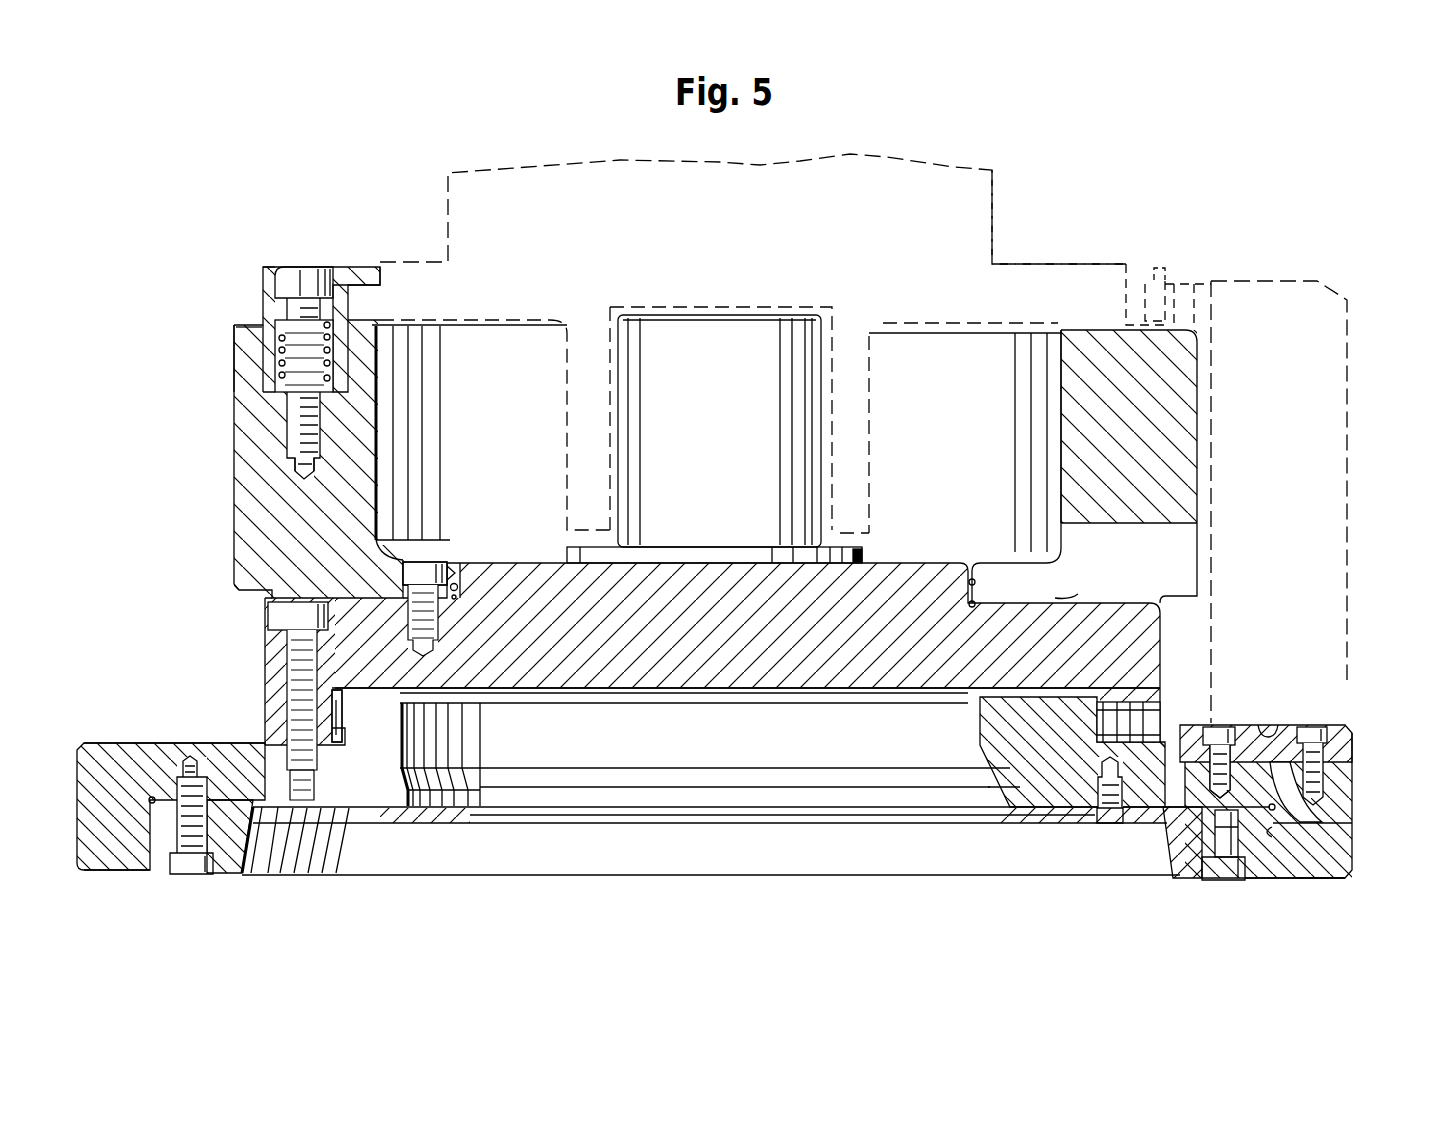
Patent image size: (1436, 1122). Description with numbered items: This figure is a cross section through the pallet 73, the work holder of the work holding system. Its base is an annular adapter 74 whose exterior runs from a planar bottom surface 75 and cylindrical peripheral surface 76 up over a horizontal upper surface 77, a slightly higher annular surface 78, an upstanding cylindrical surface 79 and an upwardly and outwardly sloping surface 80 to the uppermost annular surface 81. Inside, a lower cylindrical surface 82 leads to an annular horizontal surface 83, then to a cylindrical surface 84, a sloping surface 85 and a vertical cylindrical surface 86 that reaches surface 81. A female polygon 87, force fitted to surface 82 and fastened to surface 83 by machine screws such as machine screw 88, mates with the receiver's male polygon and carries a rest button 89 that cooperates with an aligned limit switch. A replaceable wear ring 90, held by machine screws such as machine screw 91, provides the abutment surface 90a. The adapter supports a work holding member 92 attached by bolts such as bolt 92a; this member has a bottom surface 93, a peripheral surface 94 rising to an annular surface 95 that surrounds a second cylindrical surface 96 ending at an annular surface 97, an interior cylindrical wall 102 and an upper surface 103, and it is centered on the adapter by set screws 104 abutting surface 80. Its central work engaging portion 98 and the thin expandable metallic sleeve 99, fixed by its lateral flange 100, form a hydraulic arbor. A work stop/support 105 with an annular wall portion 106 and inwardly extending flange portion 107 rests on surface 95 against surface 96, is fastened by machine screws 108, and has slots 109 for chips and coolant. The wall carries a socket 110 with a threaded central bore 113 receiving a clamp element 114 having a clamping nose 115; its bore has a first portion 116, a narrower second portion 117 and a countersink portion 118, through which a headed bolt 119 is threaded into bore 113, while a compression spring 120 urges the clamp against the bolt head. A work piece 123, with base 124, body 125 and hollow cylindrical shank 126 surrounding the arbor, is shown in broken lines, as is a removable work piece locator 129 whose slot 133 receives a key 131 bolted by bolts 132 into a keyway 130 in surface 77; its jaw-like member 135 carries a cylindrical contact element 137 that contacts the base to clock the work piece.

The pallet 73 is at (1254, 216).
The annular adapter 74 is at (1334, 860).
The bottom surface 75 is at (104, 872).
The peripheral surface 76 is at (78, 780).
The upper surface 77 is at (126, 744).
The additional horizontal annular surface 78 is at (282, 724).
The upstanding cylindrical surface 79 is at (346, 737).
The sloping surface 80 is at (340, 706).
The uppermost annular surface 81 is at (652, 688).
The lower annular cylindrical surface 82 is at (150, 846).
The annular horizontal surface 83 is at (242, 800).
The upwardly directed cylindrical surface 84 is at (740, 795).
The upwardly and outwardly sloping annular surface 85 is at (693, 775).
The vertical cylindrical surface 86 is at (884, 735).
The female polygon 87 is at (228, 870).
The machine screw 88 is at (186, 866).
The rest button 89 is at (1224, 874).
The wear ring 90 is at (668, 812).
The abutment surface 90a is at (305, 830).
The machine screw 91 is at (1102, 824).
The work holding member 92 is at (733, 639).
The bolt 92a is at (207, 655).
The bottom surface 93 is at (1097, 737).
The peripheral surface 94 is at (265, 637).
The horizontal annular surface 95 is at (348, 598).
The second cylindrical surface 96 is at (460, 592).
The second horizontal annular surface 97 is at (494, 564).
The work engaging portion 98 is at (680, 315).
The expandable metallic sleeve 99 is at (716, 435).
The lateral flange 100 is at (862, 552).
The interior cylindrical wall 102 is at (305, 718).
The horizontal upper surface 103 is at (727, 687).
The set screws 104 is at (1120, 730).
The work stop/support 105 is at (250, 458).
The annular wall portion 106 is at (258, 494).
The flange portion 107 is at (453, 566).
The machine screws 108 is at (418, 572).
The slots 109 is at (1170, 553).
The socket 110 is at (262, 392).
The threaded central bore 113 is at (298, 420).
The clamp element 114 is at (264, 283).
The clamping nose 115 is at (364, 272).
The first bore portion 116 is at (258, 346).
The second bore portion 117 is at (288, 318).
The countersink portion 118 is at (262, 268).
The headed bolt 119 is at (308, 282).
The compression spring 120 is at (278, 367).
The work piece 123 is at (998, 218).
The base 124 is at (1012, 264).
The body 125 is at (818, 156).
The cylindrical shank 126 is at (716, 461).
The removable work piece locator 129 is at (1350, 498).
The keyway 130 is at (1352, 826).
The key 131 is at (1275, 742).
The bolts 132 is at (1216, 738).
The slot 133 is at (1270, 742).
The jaw-like member 135 is at (1130, 278).
The cylindrical contact element 137 is at (1156, 272).